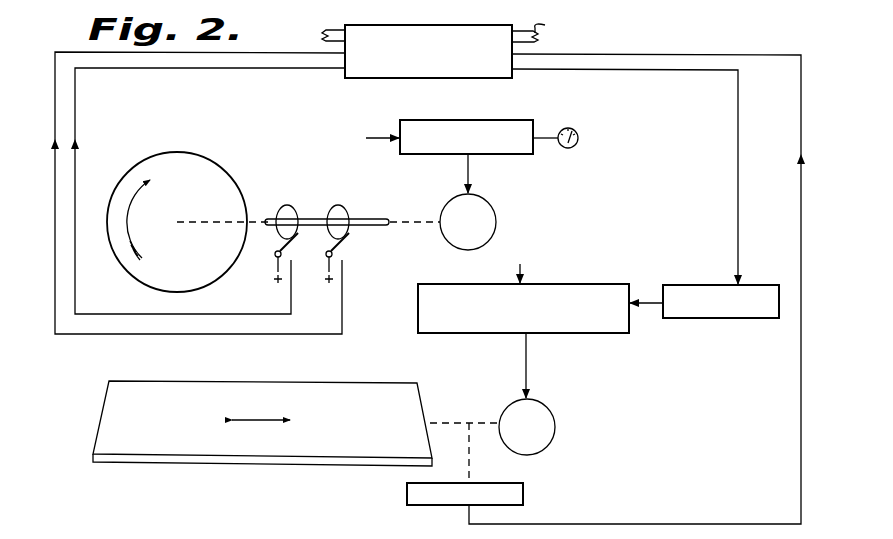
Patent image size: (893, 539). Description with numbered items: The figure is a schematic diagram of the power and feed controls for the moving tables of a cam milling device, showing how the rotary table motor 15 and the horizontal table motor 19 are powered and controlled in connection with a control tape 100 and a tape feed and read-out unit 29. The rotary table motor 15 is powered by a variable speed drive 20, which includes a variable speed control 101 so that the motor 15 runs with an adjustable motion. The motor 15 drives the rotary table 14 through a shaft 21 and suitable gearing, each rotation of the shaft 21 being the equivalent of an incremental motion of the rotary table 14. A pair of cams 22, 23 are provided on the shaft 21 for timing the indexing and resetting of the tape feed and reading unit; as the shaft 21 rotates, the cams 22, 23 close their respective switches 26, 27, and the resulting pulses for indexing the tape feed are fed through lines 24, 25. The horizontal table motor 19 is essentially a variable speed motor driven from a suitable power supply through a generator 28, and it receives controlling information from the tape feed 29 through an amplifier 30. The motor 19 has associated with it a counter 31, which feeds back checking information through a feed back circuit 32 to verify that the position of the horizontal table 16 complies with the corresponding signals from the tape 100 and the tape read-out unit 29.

The rotary table 14 is at (212, 170).
The rotary table motor 15 is at (483, 212).
The work table 16 is at (283, 450).
The horizontal table motor 19 is at (546, 436).
The variable speed drive 20 is at (471, 128).
The shaft 21 is at (373, 227).
The cam 22 is at (285, 205).
The cam 23 is at (336, 205).
The line 24 is at (120, 314).
The line 25 is at (163, 334).
The switch 26 is at (302, 240).
The switch 27 is at (353, 240).
The generator 28 is at (577, 328).
The tape feed 29 is at (506, 75).
The amplifier 30 is at (693, 312).
The counter 31 is at (514, 492).
The feed back circuit 32 is at (799, 437).
The tape 100 is at (545, 25).
The variable speed control 101 is at (577, 141).